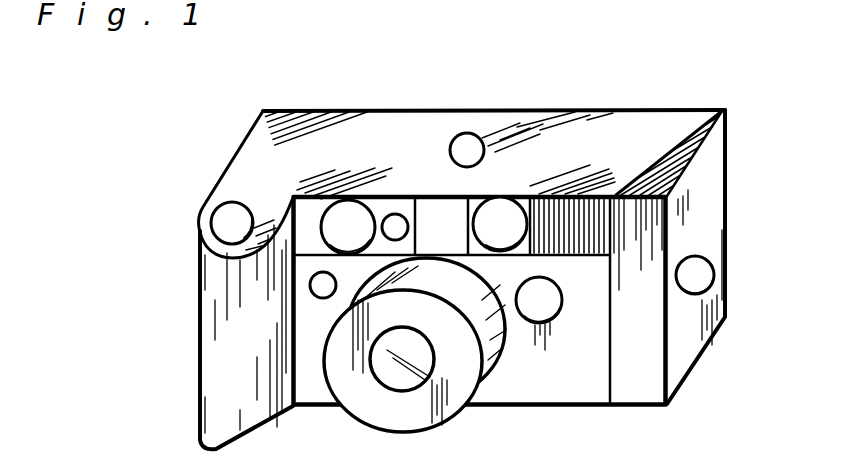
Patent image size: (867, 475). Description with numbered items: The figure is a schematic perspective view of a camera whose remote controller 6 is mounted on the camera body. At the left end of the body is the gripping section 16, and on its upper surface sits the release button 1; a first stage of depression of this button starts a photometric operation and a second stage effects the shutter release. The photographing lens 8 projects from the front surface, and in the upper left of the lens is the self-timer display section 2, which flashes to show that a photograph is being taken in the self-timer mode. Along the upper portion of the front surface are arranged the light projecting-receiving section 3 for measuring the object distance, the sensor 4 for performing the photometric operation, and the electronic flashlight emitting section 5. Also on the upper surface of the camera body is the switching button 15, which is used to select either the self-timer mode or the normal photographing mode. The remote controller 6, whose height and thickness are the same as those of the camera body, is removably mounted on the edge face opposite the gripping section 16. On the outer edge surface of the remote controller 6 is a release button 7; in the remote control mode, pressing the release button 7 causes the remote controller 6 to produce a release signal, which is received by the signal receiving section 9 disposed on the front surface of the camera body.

The release button 1 is at (227, 220).
The self-timer display section 2 is at (321, 276).
The light projecting-receiving section 3 is at (350, 212).
The sensor 4 is at (397, 212).
The electronic flashlight emitting section 5 is at (561, 193).
The remote controller 6 is at (687, 128).
The release button 7 is at (703, 267).
The taking lens 8 is at (415, 380).
The signal receiving section 9 is at (537, 312).
The switching button 15 is at (468, 145).
The gripping section 16 is at (207, 323).